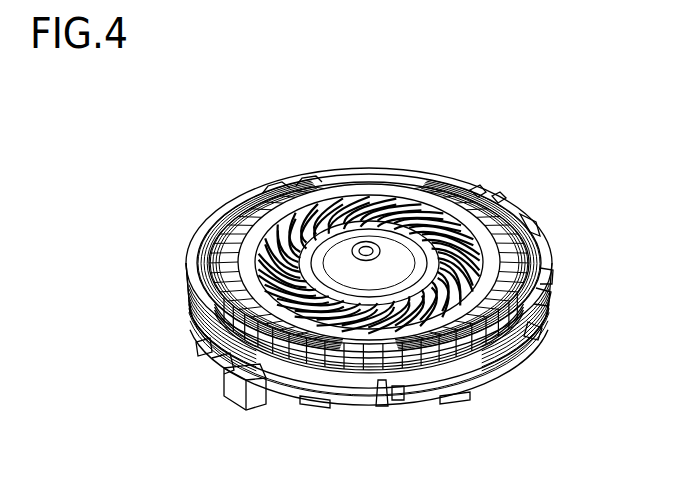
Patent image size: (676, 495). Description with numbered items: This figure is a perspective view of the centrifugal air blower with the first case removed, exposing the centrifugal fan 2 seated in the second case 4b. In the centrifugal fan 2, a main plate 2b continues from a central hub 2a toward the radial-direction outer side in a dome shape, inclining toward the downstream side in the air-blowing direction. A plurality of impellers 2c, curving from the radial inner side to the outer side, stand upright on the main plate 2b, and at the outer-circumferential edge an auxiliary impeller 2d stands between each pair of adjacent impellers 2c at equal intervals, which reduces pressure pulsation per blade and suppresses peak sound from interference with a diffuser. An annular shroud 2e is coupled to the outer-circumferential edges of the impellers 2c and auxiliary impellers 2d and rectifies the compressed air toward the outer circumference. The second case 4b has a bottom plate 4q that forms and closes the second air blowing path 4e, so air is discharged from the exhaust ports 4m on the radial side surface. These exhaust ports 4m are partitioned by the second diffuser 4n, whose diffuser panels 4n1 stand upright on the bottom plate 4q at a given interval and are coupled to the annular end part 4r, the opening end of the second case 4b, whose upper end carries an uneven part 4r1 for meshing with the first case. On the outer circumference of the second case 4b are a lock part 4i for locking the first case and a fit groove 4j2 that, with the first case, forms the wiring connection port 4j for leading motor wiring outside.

The centrifugal fan 2 is at (369, 172).
The hub 2a is at (352, 196).
The main plate 2b is at (414, 200).
The impellers 2c is at (446, 208).
The auxiliary impeller 2d is at (430, 224).
The annular shroud 2e is at (510, 215).
The second case 4b is at (258, 202).
The second air blowing path 4e is at (538, 231).
The lock part 4i is at (541, 336).
The wiring connection port 4j is at (247, 406).
The fit groove 4j2 is at (224, 393).
The exhaust port 4m is at (462, 401).
The second diffuser 4n is at (192, 304).
The diffuser panels 4n1 is at (381, 408).
The bottom plate 4q is at (496, 379).
The annular end part 4r is at (551, 303).
The uneven part 4r1 is at (553, 281).